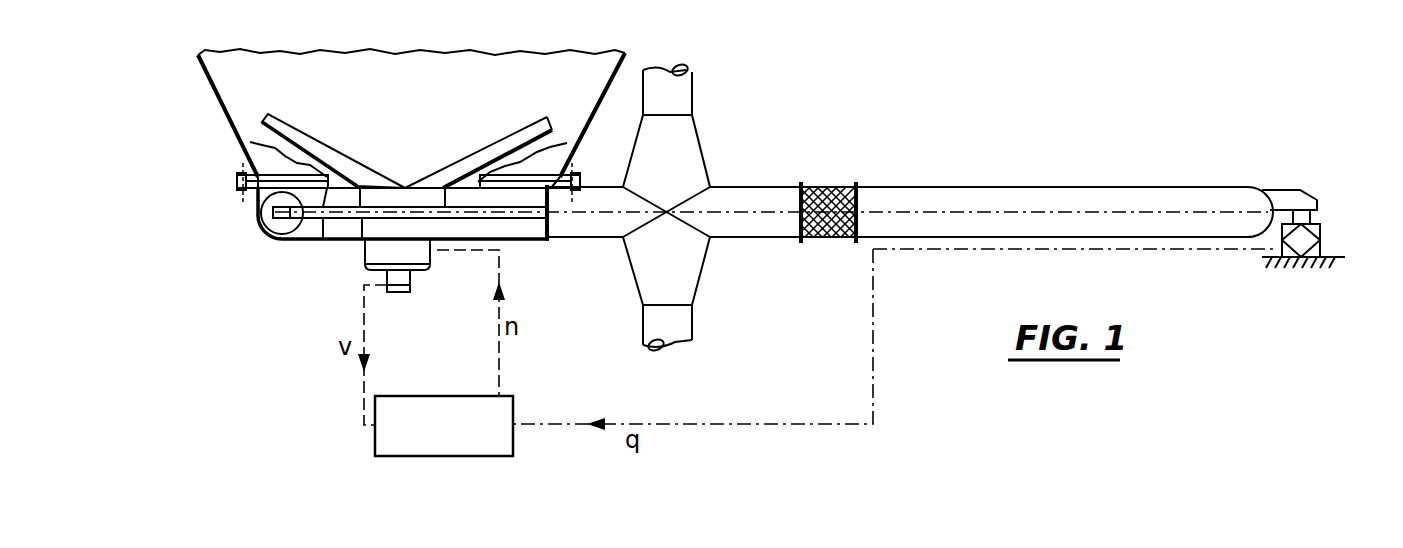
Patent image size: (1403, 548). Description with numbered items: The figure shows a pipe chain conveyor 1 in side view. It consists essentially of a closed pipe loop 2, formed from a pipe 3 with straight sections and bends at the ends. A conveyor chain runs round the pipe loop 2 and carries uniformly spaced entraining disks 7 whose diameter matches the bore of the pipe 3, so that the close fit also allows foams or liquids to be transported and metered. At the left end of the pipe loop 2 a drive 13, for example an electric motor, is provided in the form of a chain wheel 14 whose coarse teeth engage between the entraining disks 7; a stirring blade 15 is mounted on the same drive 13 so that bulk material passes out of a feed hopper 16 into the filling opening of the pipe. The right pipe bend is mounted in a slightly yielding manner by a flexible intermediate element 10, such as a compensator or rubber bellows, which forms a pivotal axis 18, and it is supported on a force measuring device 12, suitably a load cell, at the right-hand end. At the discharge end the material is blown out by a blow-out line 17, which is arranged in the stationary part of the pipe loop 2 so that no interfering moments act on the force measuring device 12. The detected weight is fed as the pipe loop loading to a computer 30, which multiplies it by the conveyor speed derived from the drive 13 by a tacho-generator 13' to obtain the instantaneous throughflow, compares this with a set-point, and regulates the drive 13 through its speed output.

The pipe chain conveyor 1 is at (1060, 165).
The pipe loop 2 is at (958, 183).
The pipe 3 is at (913, 186).
The entraining disks 7 is at (264, 222).
The flexible intermediate element 10 is at (843, 186).
The force measuring device 12 is at (1320, 230).
The drive 13 is at (426, 260).
The tacho-generator 13' is at (425, 291).
The chain wheel 14 is at (320, 240).
The stirring blade 15 is at (287, 120).
The feed hopper 16 is at (207, 74).
The blow-out line 17 is at (690, 97).
The pivotal axis 18 is at (824, 188).
The computer 30 is at (375, 440).